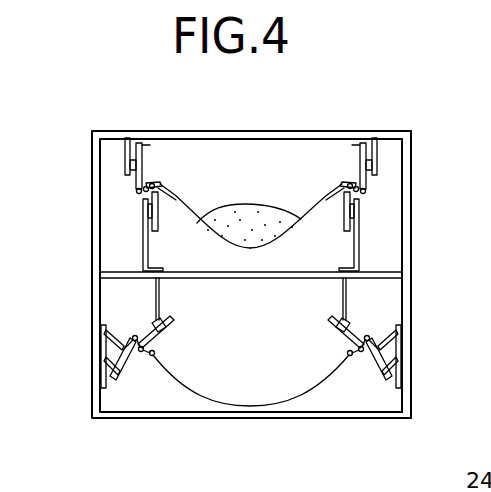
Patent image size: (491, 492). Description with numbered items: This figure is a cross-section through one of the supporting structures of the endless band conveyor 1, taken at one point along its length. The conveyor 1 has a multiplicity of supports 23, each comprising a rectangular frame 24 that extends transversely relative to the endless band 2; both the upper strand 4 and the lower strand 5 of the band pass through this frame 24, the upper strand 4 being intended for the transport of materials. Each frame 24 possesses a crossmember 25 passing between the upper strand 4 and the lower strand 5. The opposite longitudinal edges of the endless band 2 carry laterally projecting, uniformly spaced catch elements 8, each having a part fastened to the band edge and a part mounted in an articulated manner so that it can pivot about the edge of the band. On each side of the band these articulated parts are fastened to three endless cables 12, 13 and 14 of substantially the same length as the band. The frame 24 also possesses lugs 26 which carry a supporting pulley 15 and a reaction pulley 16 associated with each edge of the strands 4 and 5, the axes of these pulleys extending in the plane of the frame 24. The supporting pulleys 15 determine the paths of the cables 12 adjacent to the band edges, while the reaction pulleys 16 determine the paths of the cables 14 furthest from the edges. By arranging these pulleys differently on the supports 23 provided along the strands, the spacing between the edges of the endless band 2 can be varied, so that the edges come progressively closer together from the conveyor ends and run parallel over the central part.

The endless band conveyor 1 is at (85, 182).
The endless band 2 is at (317, 194).
The upper strand 4 is at (182, 203).
The lower strand 5 is at (200, 391).
The catch element 8 is at (151, 184).
The endless cable 12 is at (152, 357).
The endless cable 13 is at (134, 356).
The endless cable 14 is at (131, 338).
The supporting pulley 15 is at (342, 231).
The reaction pulley 16 is at (362, 160).
The support 23 is at (418, 173).
The rectangular frame 24 is at (405, 203).
The crossmember 25 is at (243, 278).
The lug 26 is at (142, 258).